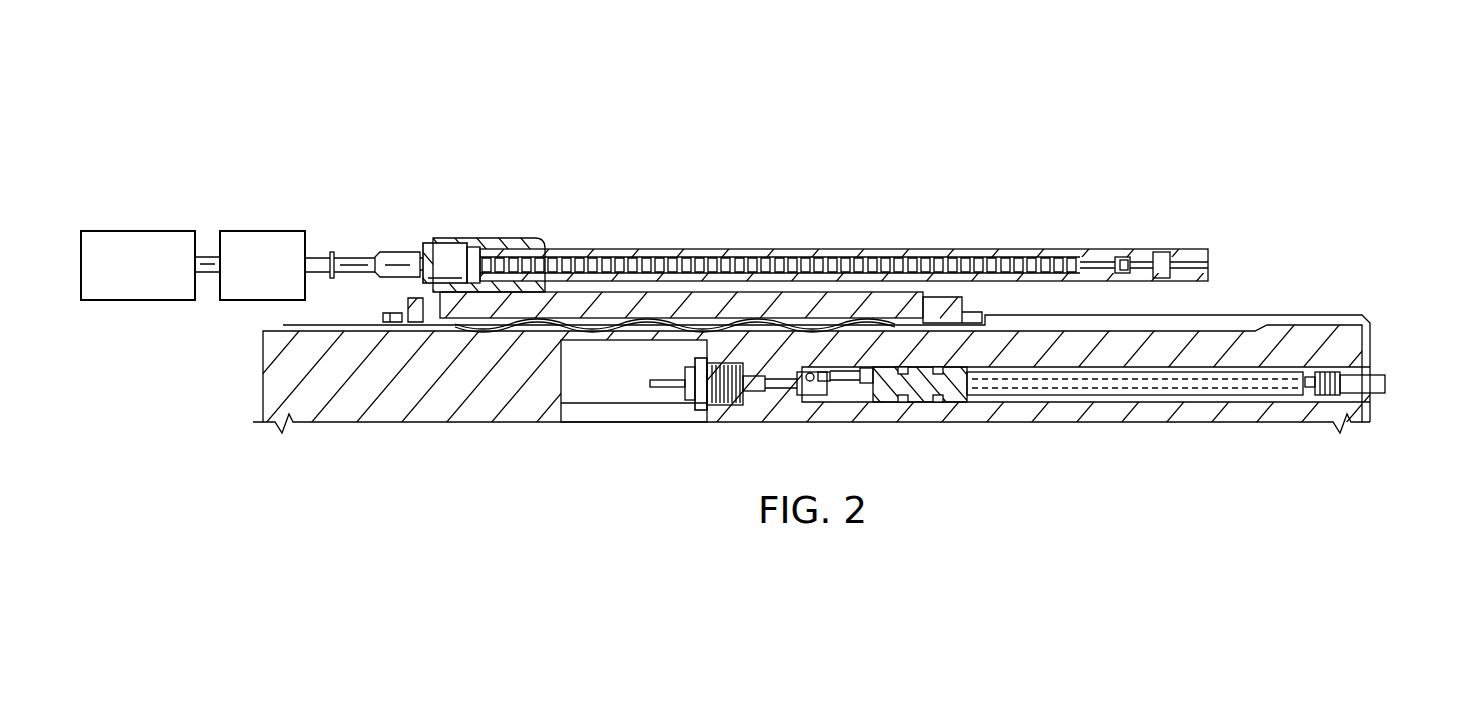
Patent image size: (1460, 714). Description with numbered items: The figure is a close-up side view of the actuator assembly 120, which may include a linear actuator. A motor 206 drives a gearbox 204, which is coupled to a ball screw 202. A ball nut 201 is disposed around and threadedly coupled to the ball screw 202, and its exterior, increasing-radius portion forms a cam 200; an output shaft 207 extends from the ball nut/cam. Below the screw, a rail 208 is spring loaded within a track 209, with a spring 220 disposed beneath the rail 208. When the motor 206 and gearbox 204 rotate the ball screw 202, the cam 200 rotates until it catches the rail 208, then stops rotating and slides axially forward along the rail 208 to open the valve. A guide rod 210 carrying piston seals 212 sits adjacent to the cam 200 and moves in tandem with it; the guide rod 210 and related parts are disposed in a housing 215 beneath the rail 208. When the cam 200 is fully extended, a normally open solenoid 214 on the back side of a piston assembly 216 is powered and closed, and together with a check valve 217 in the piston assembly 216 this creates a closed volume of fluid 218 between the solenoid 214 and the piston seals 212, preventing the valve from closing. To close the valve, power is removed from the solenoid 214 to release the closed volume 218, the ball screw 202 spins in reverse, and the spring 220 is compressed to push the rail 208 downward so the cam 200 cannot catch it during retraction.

The actuator assembly 120 is at (441, 109).
The cam 200 is at (522, 238).
The ball nut 201 is at (485, 233).
The ball screw 202 is at (770, 249).
The gearbox 204 is at (262, 231).
The motor 206 is at (140, 231).
The output shaft 207 is at (1108, 249).
The rail 208 is at (605, 300).
The track 209 is at (418, 304).
The guide rod 210 is at (1387, 386).
The piston seals 212 is at (1335, 372).
The solenoid 214 is at (673, 402).
The housing 215 is at (435, 415).
The piston assembly 216 is at (890, 396).
The check valve 217 is at (806, 370).
The closed volume of fluid 218 is at (1207, 385).
The spring 220 is at (480, 331).